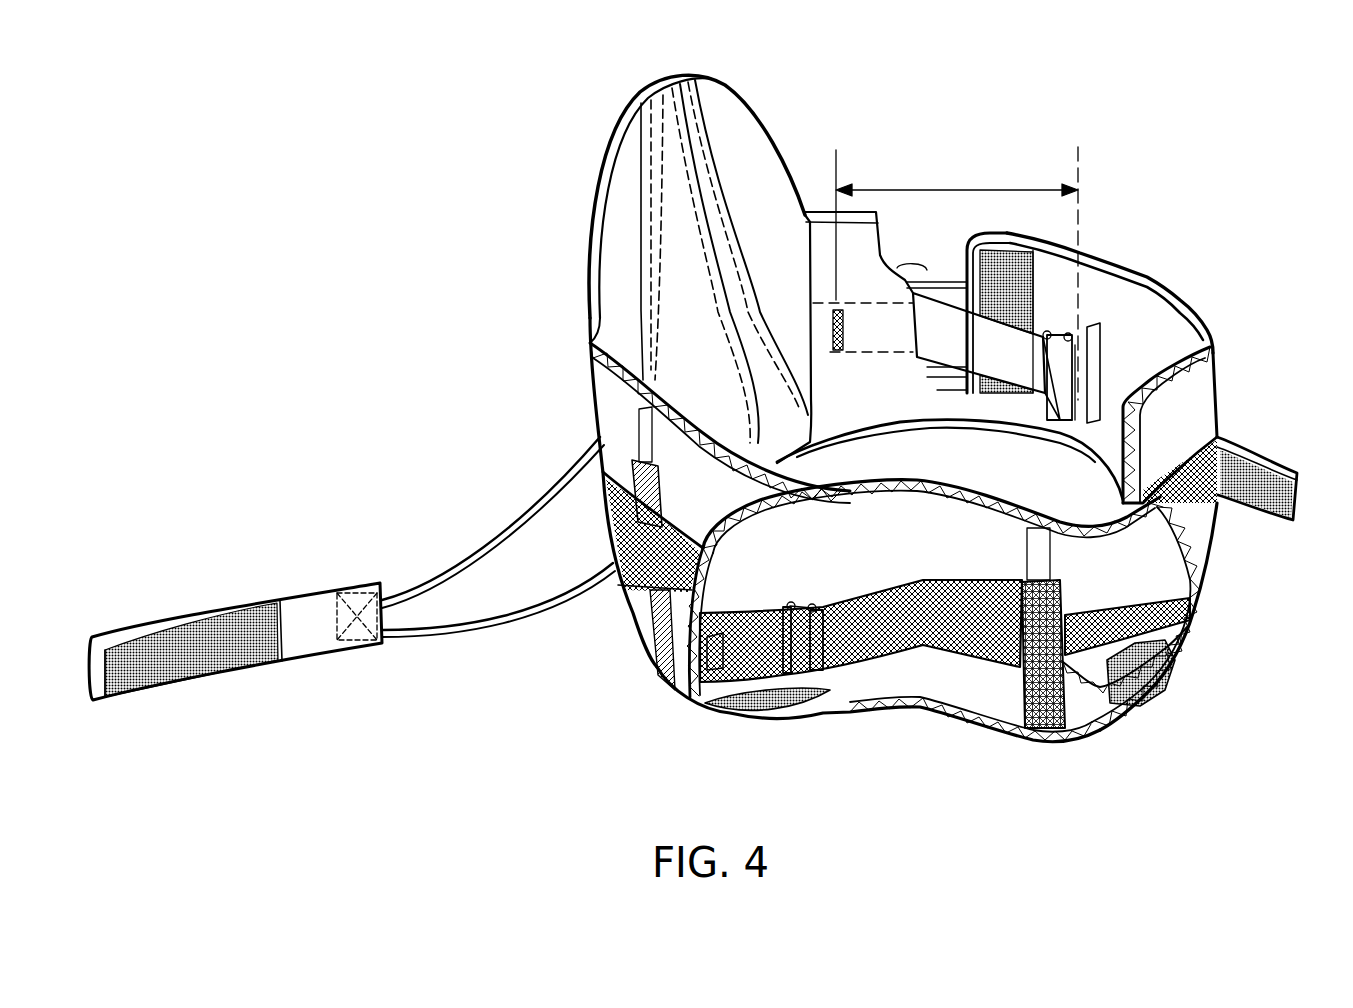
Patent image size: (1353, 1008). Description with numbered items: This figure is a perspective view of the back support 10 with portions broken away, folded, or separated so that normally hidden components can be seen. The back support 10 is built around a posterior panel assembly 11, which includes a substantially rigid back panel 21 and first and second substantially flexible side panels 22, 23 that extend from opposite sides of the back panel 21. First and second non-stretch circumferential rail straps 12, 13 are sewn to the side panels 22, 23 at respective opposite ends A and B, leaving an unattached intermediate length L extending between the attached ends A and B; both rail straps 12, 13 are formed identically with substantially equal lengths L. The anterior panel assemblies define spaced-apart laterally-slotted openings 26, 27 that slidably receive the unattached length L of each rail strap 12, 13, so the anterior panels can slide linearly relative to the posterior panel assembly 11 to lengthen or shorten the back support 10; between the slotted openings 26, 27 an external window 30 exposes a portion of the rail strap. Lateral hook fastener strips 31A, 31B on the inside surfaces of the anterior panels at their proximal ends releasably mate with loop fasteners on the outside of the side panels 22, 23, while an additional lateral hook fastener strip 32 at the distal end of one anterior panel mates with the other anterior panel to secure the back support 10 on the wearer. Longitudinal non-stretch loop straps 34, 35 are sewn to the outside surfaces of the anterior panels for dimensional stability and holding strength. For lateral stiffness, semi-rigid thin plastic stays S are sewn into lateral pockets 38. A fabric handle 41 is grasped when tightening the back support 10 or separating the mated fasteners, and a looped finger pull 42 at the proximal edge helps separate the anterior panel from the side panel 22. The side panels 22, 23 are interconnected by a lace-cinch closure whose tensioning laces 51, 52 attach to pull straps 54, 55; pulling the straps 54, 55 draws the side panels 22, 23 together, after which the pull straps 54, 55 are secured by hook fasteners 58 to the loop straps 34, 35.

The back support 10 is at (1167, 250).
The posterior panel assembly 11 is at (562, 239).
The first non-stretch circumferential rail strap 12 is at (615, 578).
The second non-stretch circumferential rail strap 13 is at (982, 354).
The back panel 21 is at (757, 150).
The first side panel 22 is at (605, 390).
The second side panel 23 is at (907, 413).
The laterally-slotted opening 26 is at (1060, 422).
The laterally-slotted opening 27 is at (1062, 370).
The external window 30 is at (803, 610).
The lateral hook fastener strip 31A is at (760, 720).
The lateral hook fastener strip 31B is at (975, 275).
The lateral hook fastener strip 32 is at (1130, 710).
The longitudinal non-stretch loop strap 34 is at (943, 643).
The longitudinal non-stretch loop strap 35 is at (1197, 463).
The lateral pocket 38 is at (660, 502).
The fabric handle 41 is at (1180, 613).
The looped finger pull 42 is at (707, 653).
The tensioning lace 51 is at (897, 271).
The tensioning lace 52 is at (527, 600).
The pull strap 54 is at (1270, 455).
The pull strap 55 is at (152, 623).
The hook fastener 58 is at (1248, 512).
The attached end A is at (838, 355).
The attached end B is at (1090, 375).
The unattached intermediate length L is at (968, 188).
The semi-rigid thin plastic stay S is at (647, 450).